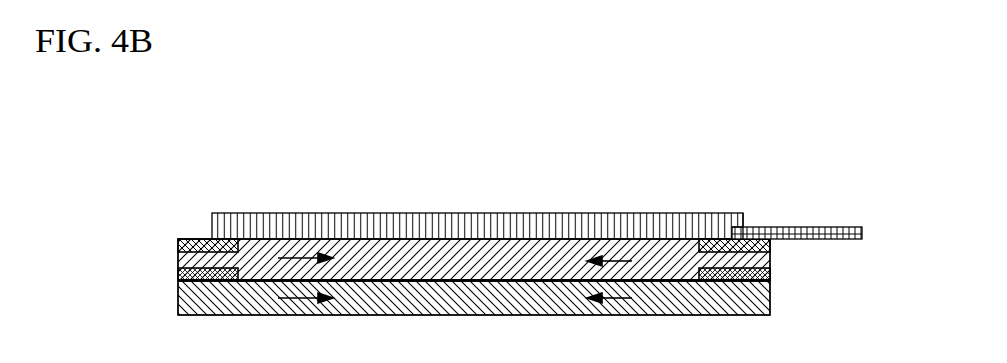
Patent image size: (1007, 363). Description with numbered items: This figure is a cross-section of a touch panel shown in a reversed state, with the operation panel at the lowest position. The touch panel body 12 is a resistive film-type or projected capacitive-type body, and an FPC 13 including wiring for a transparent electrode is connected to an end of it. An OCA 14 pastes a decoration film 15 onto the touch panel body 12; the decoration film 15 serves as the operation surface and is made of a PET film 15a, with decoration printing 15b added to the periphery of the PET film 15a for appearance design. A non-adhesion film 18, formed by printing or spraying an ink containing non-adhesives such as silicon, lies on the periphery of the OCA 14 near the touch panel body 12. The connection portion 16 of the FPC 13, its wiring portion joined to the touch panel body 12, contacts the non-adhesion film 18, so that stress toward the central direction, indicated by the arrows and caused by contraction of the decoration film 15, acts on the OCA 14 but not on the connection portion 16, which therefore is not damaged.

The touch panel body 12 is at (320, 213).
The FPC 13 is at (812, 227).
The OCA 14 is at (178, 252).
The decoration film 15 is at (464, 258).
The PET film 15a is at (178, 302).
The decoration printing 15b is at (178, 275).
The connection portion 16 is at (743, 229).
The non-adhesion film 18 is at (198, 239).